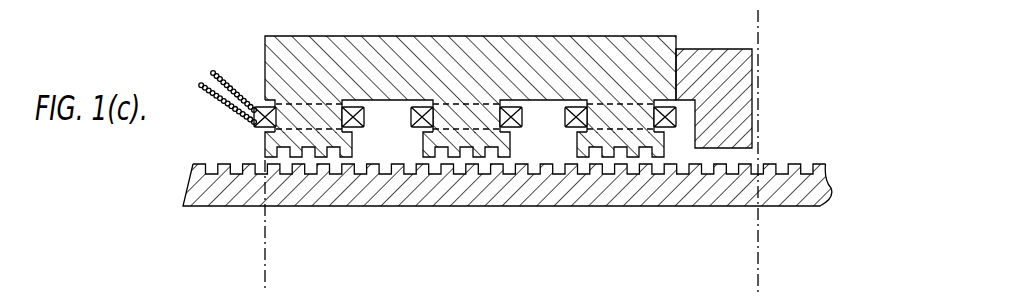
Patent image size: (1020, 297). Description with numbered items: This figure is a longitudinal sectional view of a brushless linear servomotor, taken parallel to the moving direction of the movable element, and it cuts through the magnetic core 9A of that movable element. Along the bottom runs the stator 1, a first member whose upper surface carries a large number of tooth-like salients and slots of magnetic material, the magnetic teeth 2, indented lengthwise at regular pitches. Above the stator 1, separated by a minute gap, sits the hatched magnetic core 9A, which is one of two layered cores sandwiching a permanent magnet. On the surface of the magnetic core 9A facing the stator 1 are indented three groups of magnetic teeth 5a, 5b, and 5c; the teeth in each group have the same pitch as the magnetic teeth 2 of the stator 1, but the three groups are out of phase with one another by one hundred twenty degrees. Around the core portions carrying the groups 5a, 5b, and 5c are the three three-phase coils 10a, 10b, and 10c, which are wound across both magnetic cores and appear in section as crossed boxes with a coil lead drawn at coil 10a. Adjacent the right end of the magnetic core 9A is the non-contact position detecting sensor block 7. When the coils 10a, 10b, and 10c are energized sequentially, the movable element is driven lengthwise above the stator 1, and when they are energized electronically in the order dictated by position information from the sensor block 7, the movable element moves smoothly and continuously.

The stator 1 is at (813, 199).
The magnetic teeth 2 is at (767, 163).
The magnetic teeth group 5a is at (300, 147).
The magnetic teeth group 5b is at (453, 147).
The magnetic teeth group 5c is at (583, 147).
The non-contact position detecting sensor block 7 is at (742, 71).
The magnetic core 9A is at (657, 53).
The three-phase coil 10a is at (255, 107).
The three-phase coil 10b is at (410, 118).
The three-phase coil 10c is at (567, 120).